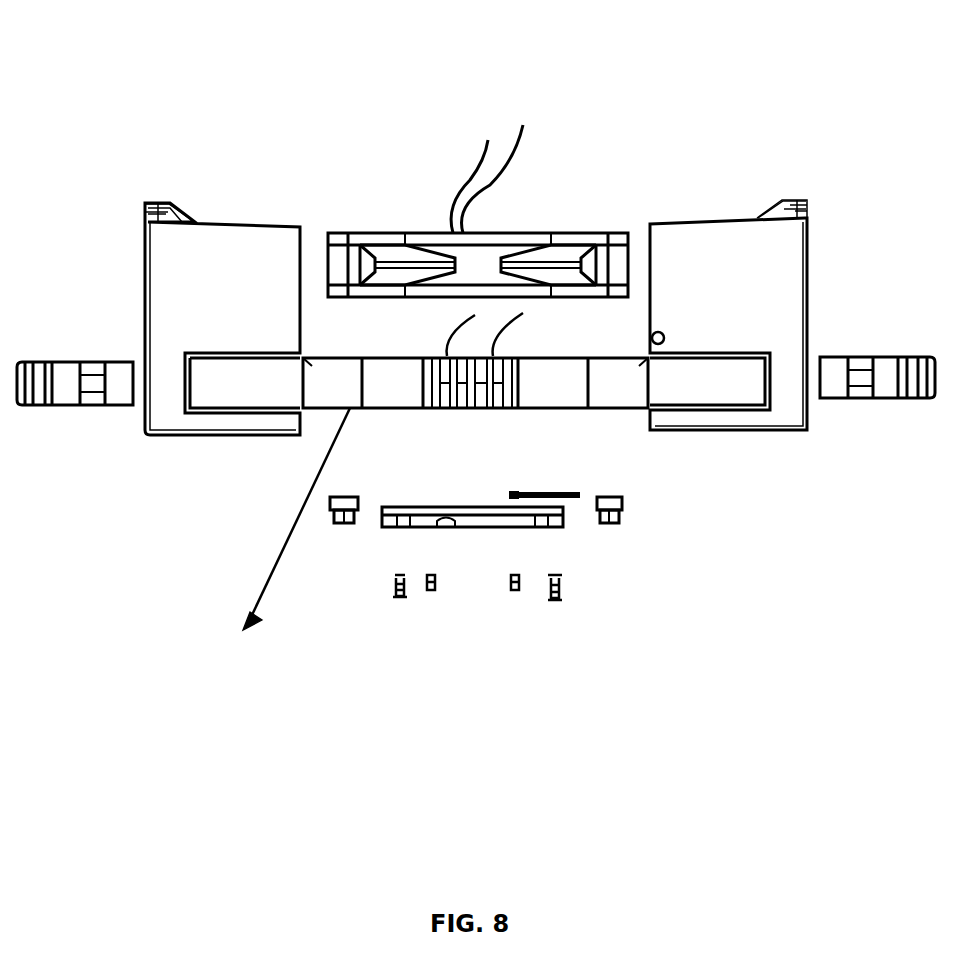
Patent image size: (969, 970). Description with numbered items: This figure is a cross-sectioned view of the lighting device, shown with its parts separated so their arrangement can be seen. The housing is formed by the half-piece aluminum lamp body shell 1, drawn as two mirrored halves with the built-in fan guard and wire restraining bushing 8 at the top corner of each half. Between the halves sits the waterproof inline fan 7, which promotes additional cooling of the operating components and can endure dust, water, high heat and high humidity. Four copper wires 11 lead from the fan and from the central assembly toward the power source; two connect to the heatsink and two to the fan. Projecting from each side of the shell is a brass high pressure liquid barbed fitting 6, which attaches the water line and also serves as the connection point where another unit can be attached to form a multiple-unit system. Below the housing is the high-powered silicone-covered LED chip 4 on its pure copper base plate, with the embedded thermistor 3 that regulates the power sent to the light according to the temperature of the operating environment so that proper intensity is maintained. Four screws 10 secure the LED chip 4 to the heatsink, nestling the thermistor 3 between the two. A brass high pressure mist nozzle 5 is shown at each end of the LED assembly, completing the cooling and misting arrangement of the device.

The aluminum lamp body shell 1 is at (228, 435).
The Positive Temperature Coefficient thermistor 3 is at (570, 488).
The LED chip 4 is at (485, 527).
The brass high pressure mist nozzle 5 is at (338, 523).
The brass high pressure liquid barbed fitting 6 is at (70, 405).
The inline fan 7 is at (386, 233).
The fan guard and wire restraining bushing 8 is at (168, 195).
The m3 screws 10 is at (400, 597).
The copper wires 11 is at (510, 147).